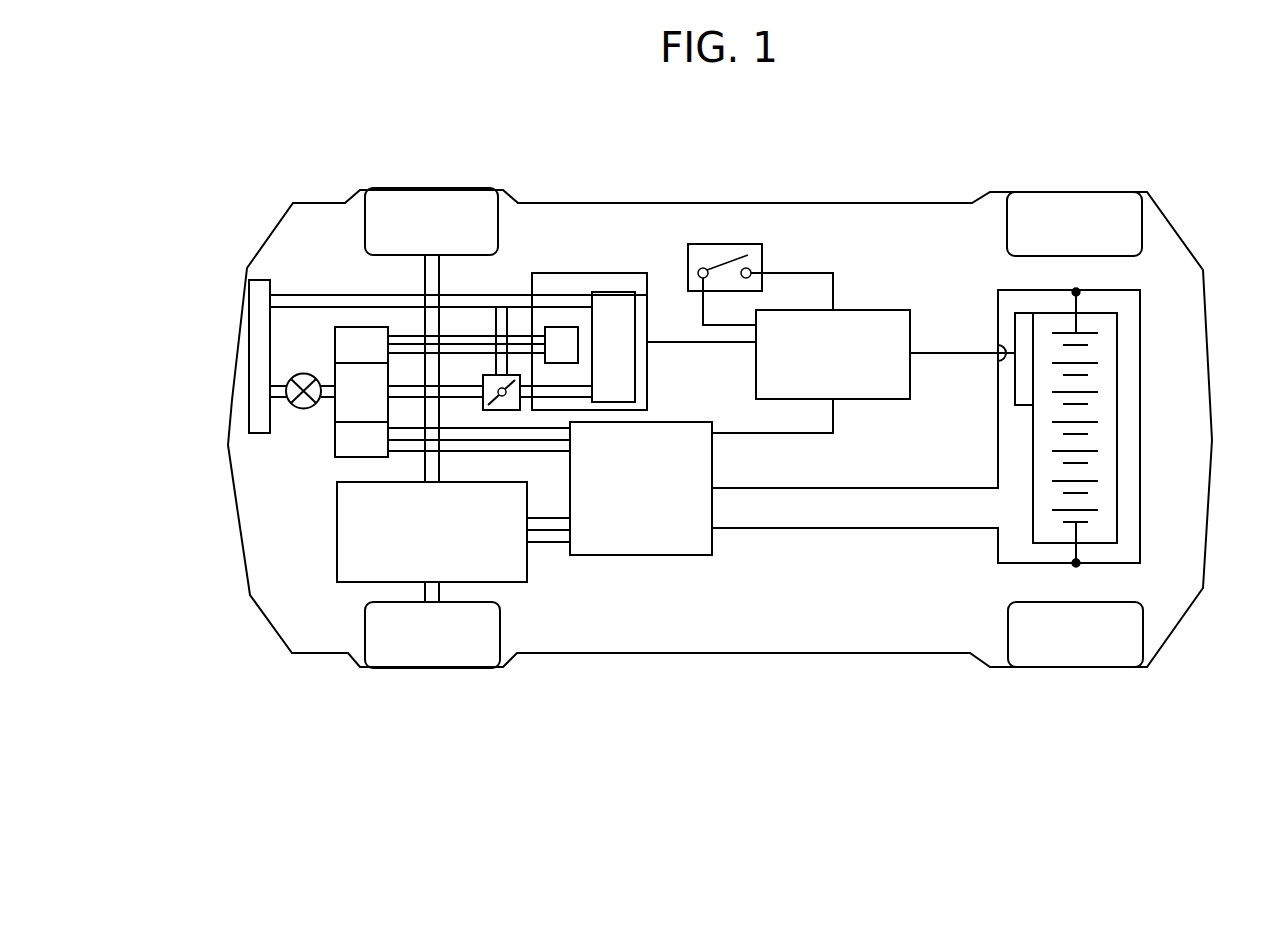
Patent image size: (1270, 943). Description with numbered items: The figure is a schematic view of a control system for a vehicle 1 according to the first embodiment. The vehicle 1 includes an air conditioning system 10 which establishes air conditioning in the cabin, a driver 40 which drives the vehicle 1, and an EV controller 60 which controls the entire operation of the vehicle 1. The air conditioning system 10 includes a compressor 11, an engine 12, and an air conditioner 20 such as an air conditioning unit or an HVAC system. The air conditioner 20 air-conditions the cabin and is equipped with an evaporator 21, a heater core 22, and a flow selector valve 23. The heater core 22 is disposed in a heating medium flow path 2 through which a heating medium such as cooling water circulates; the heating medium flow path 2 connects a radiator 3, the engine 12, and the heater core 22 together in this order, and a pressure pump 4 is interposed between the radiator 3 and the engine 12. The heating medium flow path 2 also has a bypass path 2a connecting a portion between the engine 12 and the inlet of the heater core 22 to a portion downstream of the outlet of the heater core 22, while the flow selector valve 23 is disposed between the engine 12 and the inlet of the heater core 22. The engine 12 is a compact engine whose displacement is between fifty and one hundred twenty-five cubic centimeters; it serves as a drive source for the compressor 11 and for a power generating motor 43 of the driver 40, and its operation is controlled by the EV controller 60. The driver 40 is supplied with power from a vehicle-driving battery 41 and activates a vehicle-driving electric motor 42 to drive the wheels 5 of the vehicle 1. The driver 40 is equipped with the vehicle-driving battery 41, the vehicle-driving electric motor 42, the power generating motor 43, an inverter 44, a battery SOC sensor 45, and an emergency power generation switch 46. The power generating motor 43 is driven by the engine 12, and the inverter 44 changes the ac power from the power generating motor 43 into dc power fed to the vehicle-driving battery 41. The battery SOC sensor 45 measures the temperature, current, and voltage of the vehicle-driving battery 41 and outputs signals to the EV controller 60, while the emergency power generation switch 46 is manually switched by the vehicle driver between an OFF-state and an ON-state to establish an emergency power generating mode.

The vehicle 1 is at (818, 152).
The heating medium flow path 2 is at (320, 298).
The bypass path 2a is at (503, 323).
The radiator 3 is at (257, 343).
The pressure pump 4 is at (307, 372).
The wheels 5 is at (432, 210).
The air conditioning system 10 is at (602, 318).
The compressor 11 is at (362, 333).
The engine 12 is at (343, 410).
The air conditioner 20 is at (647, 365).
The evaporator 21 is at (558, 338).
The heater core 22 is at (612, 313).
The flow selector valve 23 is at (510, 403).
The driver 40 is at (815, 547).
The vehicle-driving battery 41 is at (1107, 435).
The vehicle-driving electric motor 42 is at (333, 543).
The power generating motor 43 is at (355, 448).
The inverter 44 is at (640, 558).
The battery SOC sensor 45 is at (1017, 370).
The emergency power generation switch 46 is at (725, 242).
The EV controller 60 is at (867, 310).